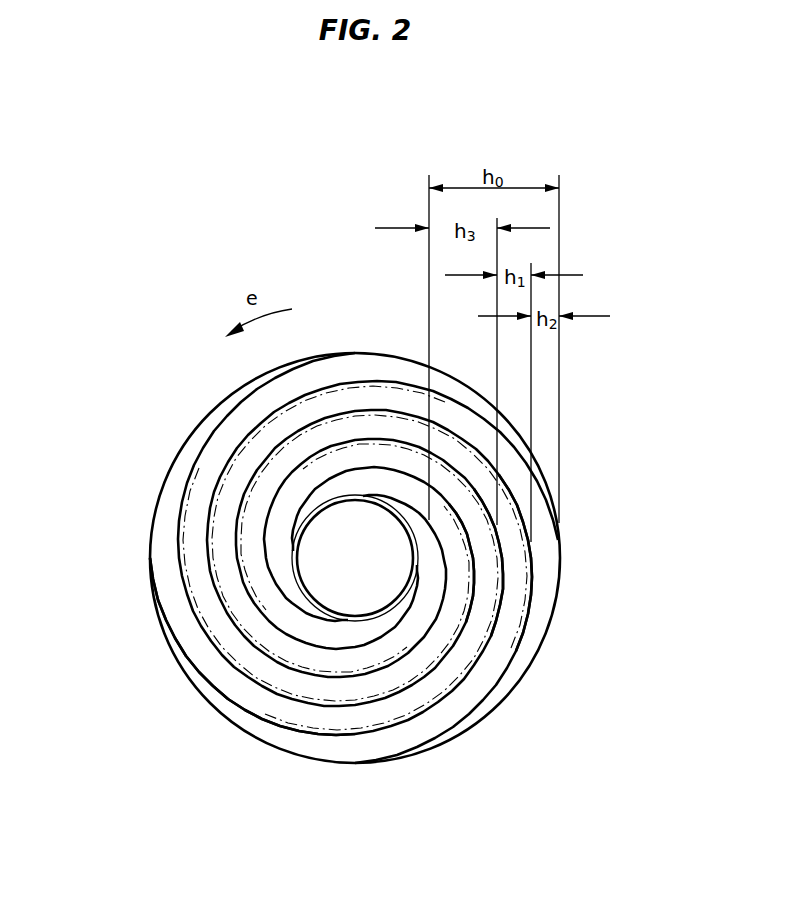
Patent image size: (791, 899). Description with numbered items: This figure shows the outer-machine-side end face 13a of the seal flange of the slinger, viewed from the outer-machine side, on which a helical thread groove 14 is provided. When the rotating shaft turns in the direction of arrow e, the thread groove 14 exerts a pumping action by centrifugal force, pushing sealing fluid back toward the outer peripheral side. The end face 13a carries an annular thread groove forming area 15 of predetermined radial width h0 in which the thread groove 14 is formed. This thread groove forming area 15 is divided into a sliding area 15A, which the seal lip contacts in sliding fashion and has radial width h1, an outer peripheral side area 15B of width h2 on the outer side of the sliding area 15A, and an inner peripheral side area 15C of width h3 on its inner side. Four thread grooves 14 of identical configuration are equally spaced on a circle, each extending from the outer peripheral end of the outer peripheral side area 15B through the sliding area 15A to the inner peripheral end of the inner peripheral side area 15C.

The outer-machine-side end face 13a is at (200, 422).
The thread groove 14 is at (405, 385).
The thread groove forming area 15 is at (163, 575).
The sliding area 15A is at (512, 540).
The outer peripheral side area 15B is at (540, 578).
The inner peripheral side area 15C is at (460, 597).